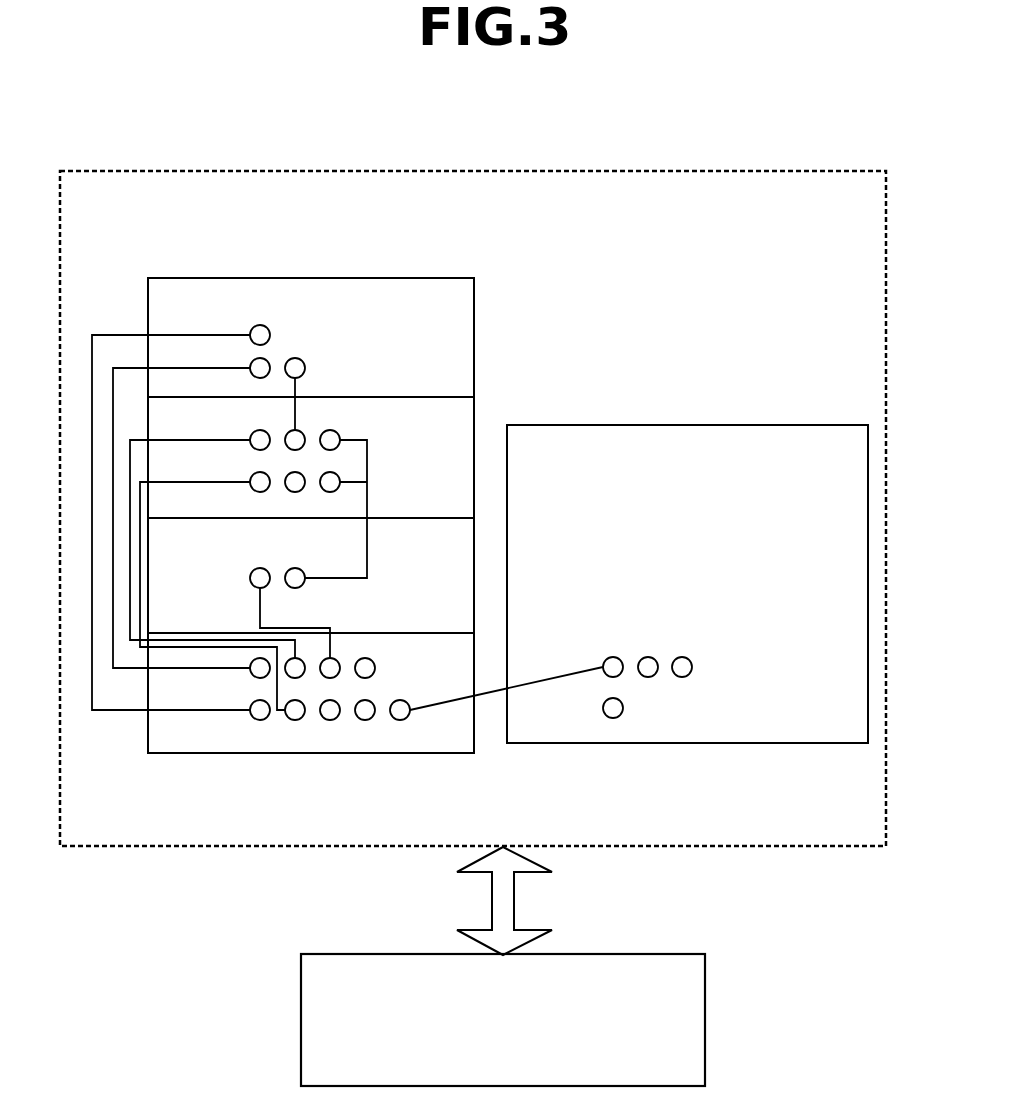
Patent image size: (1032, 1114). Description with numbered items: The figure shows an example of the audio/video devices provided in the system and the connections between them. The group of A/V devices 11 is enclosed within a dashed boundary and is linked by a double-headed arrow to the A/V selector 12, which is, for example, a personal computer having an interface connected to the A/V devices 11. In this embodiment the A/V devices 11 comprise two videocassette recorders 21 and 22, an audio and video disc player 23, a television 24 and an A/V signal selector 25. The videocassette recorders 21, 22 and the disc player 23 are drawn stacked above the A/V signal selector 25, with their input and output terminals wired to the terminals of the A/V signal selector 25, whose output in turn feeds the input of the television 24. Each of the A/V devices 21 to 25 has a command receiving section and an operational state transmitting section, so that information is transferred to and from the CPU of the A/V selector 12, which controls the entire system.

The group of A/V devices 11 is at (682, 170).
The A/V selector 12 is at (705, 1017).
The videocassette recorder 21 is at (474, 307).
The videocassette recorder 22 is at (474, 425).
The audio and video disc player 23 is at (474, 567).
The television 24 is at (668, 425).
The A/V signal selector 25 is at (398, 754).